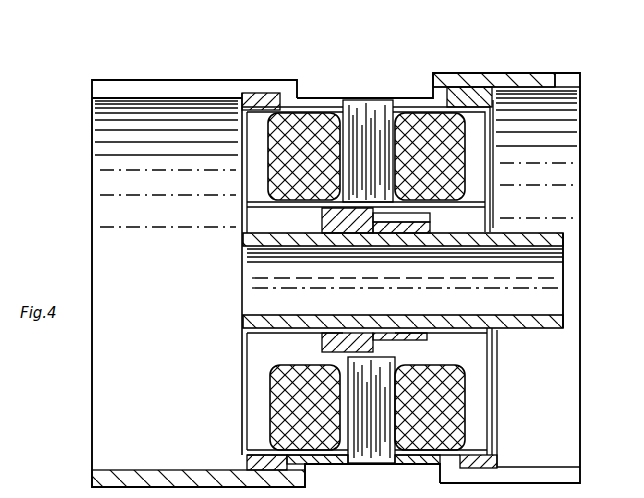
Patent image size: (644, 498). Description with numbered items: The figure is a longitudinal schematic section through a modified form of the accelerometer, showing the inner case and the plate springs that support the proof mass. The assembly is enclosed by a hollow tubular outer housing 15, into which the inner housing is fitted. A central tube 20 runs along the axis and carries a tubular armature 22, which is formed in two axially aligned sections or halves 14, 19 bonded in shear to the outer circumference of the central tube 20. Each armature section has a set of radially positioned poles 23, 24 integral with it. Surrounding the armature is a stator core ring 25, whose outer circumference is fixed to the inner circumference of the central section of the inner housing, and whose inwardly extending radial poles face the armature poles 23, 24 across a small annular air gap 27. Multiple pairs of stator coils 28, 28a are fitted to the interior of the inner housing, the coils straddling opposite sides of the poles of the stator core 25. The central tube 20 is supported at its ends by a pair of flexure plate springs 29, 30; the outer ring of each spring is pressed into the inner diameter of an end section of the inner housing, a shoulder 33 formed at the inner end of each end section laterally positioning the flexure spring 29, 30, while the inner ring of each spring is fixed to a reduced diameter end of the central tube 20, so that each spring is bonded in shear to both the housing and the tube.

The armature section 14 is at (308, 214).
The outer housing 15 is at (498, 73).
The armature section 19 is at (438, 234).
The central tube 20 is at (524, 323).
The armature 22 is at (322, 340).
The armature pole 23 is at (320, 218).
The armature pole 24 is at (427, 221).
The stator core ring 25 is at (358, 104).
The annular air gap 27 is at (358, 210).
The stator coil 28 is at (470, 409).
The stator coil 28a is at (418, 122).
The flexure plate spring 29 is at (241, 212).
The flexure plate spring 30 is at (495, 203).
The shoulder 33 is at (447, 82).